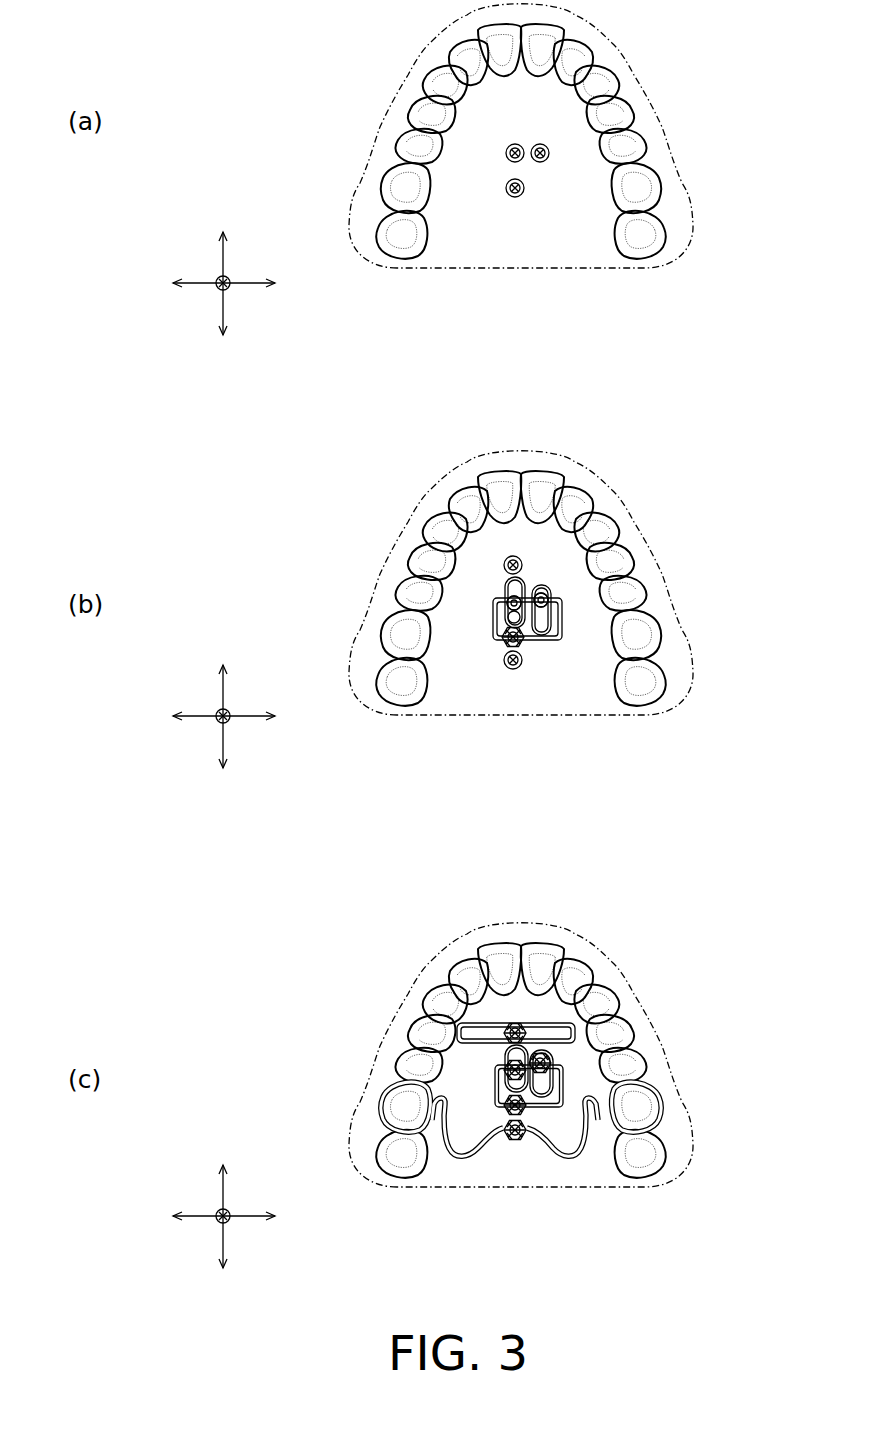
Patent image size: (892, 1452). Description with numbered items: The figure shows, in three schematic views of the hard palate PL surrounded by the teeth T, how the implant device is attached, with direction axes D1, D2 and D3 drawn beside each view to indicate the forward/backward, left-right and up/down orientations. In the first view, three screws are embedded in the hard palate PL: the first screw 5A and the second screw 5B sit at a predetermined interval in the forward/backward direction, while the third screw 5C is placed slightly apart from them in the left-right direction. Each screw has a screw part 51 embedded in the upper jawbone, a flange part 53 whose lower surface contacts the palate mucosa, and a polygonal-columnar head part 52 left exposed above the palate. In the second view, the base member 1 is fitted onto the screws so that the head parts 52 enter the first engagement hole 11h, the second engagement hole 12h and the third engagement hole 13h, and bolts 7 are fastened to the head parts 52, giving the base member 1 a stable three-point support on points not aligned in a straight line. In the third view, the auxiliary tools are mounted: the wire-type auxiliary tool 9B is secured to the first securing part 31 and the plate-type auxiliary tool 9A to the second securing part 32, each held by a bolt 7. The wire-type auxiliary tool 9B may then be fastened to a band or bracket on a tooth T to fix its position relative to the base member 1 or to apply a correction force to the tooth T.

The tooth T is at (438, 78).
The hard palate PL is at (588, 248).
The first screw 5A is at (512, 197).
The second screw 5B is at (505, 148).
The third screw 5C is at (548, 147).
The screw part 51 is at (522, 192).
The polygonal-columnar head part 52 is at (512, 195).
The flange part 53 is at (508, 192).
The base member 1 is at (543, 568).
The bolt 7 is at (505, 585).
The second securing part 32 is at (510, 555).
The first securing part 31 is at (514, 670).
The second engagement hole 12h is at (497, 625).
The first engagement hole 11h is at (550, 642).
The third engagement hole 13h is at (563, 633).
The plate-type auxiliary tool 9A is at (562, 1031).
The wire-type auxiliary tool 9B is at (548, 1152).
The direction D1 is at (224, 737).
The direction D2 is at (300, 753).
The direction D3 is at (250, 734).